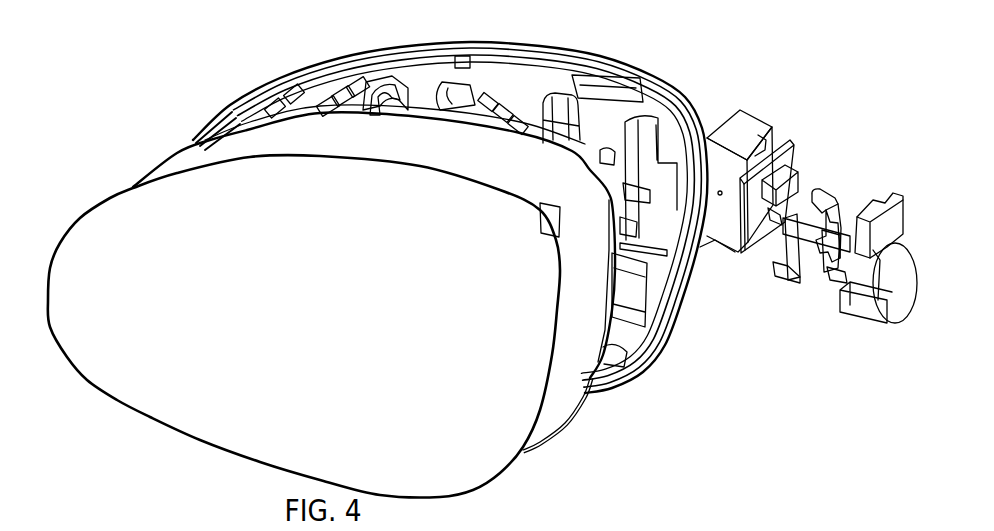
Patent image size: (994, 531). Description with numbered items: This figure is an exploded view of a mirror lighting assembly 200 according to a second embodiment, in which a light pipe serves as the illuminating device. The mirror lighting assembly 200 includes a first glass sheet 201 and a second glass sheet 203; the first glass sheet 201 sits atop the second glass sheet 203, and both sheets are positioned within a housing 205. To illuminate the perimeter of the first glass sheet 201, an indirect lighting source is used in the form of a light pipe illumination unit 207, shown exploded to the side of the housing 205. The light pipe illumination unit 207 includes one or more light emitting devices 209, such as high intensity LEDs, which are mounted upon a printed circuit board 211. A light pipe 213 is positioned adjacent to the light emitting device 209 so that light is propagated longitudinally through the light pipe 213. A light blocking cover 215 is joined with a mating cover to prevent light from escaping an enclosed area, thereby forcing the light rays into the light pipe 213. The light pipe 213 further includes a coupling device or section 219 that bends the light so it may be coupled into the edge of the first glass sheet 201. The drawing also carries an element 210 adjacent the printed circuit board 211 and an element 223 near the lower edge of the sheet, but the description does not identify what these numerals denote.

The mirror lighting assembly 200 is at (136, 84).
The first glass sheet 201 is at (105, 228).
The second glass sheet 203 is at (187, 164).
The housing 205 is at (306, 87).
The light pipe illumination unit 207 is at (753, 97).
The light emitting device 209 is at (790, 272).
The connector housing 210 is at (735, 113).
The printed circuit board 211 is at (793, 153).
The light pipe 213 is at (812, 190).
The light blocking cover 215 is at (892, 227).
The coupling device or section 219 is at (897, 307).
The component 223 is at (622, 530).